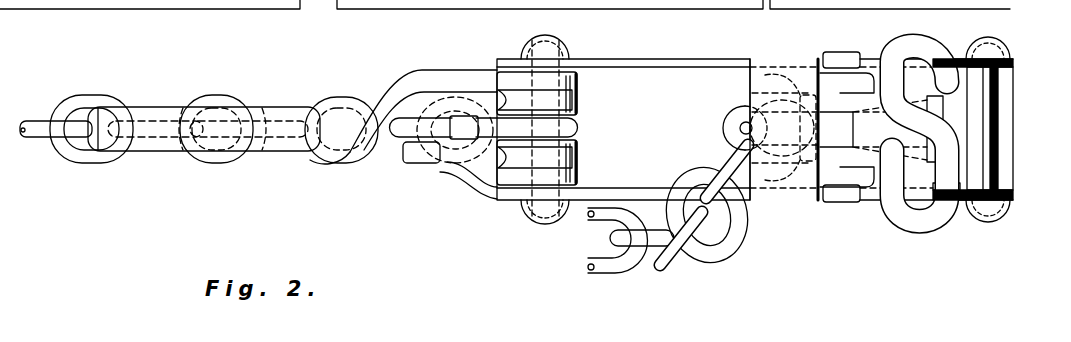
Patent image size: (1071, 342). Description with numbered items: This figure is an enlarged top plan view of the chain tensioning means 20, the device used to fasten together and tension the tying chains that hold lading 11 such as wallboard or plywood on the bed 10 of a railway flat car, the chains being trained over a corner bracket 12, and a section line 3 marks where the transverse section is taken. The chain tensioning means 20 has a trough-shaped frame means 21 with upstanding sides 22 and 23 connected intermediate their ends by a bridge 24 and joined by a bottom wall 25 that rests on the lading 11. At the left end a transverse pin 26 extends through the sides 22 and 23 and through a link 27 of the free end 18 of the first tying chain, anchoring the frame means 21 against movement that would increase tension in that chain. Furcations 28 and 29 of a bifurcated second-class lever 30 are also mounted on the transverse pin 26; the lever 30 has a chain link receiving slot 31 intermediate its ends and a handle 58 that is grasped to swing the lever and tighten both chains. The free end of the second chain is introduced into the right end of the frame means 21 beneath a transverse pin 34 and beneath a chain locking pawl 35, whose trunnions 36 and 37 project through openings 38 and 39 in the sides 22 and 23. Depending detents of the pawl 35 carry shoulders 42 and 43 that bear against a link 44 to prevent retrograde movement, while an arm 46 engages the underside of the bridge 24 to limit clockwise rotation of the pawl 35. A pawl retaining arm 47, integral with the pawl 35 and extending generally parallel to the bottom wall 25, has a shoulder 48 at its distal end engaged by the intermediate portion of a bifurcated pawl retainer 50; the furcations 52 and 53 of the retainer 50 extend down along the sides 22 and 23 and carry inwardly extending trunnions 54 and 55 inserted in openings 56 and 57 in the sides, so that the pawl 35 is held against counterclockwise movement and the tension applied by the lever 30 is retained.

The section line 3- 3 is at (3, 147).
The bed 10 is at (227, 10).
The lading 11 is at (124, 9).
The corner bracket 12 is at (1032, 6).
The free end of tying chain 18 is at (215, 165).
The chain tensioning means 20 is at (490, 205).
The frame means 21 is at (661, 54).
The upstanding side 22 is at (712, 62).
The upstanding side 23 is at (643, 188).
The bridge 24 is at (762, 63).
The bottom wall 25 is at (676, 120).
The transverse pin 26 is at (537, 82).
The link 27 is at (578, 128).
The furcation 28 is at (577, 98).
The furcation 29 is at (577, 172).
The bifurcated second-class lever 30 is at (393, 63).
The chain link receiving slot 31 is at (392, 146).
The transverse pin 34 is at (1003, 86).
The chain locking pawl 35 is at (925, 96).
The trunnion 36 is at (843, 52).
The trunnion 37 is at (845, 202).
The opening 38 is at (825, 66).
The opening 39 is at (827, 198).
The shoulder 42 is at (786, 101).
The shoulder 43 is at (800, 155).
The link 44 is at (738, 122).
The arm 46 is at (743, 104).
The pawl retaining arm 47 is at (938, 98).
The shoulder 48 is at (935, 123).
The bifurcated pawl retainer 50 is at (955, 28).
The furcation 52 is at (910, 30).
The furcation 53 is at (917, 221).
The trunnion 54 is at (985, 68).
The trunnion 55 is at (950, 185).
The opening 56 is at (980, 44).
The opening 57 is at (978, 218).
The handle 58 is at (279, 106).